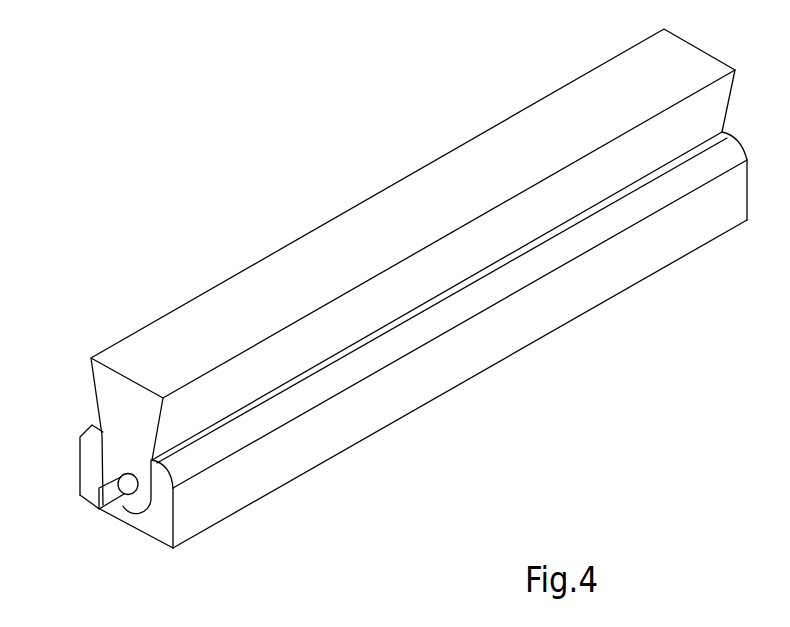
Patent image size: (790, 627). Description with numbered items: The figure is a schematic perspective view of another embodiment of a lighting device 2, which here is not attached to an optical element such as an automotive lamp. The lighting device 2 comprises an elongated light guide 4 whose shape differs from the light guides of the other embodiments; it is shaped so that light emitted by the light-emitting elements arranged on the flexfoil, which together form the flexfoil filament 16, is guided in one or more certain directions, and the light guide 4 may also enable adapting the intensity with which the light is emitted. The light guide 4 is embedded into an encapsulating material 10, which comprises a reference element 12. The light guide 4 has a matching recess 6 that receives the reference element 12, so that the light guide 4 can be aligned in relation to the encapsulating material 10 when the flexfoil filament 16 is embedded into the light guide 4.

The lighting device 2 is at (382, 314).
The light guide 4 is at (157, 340).
The recess 6 is at (105, 473).
The encapsulating material 10 is at (223, 497).
The reference element 12 is at (128, 503).
The flexfoil filament 16 is at (108, 490).